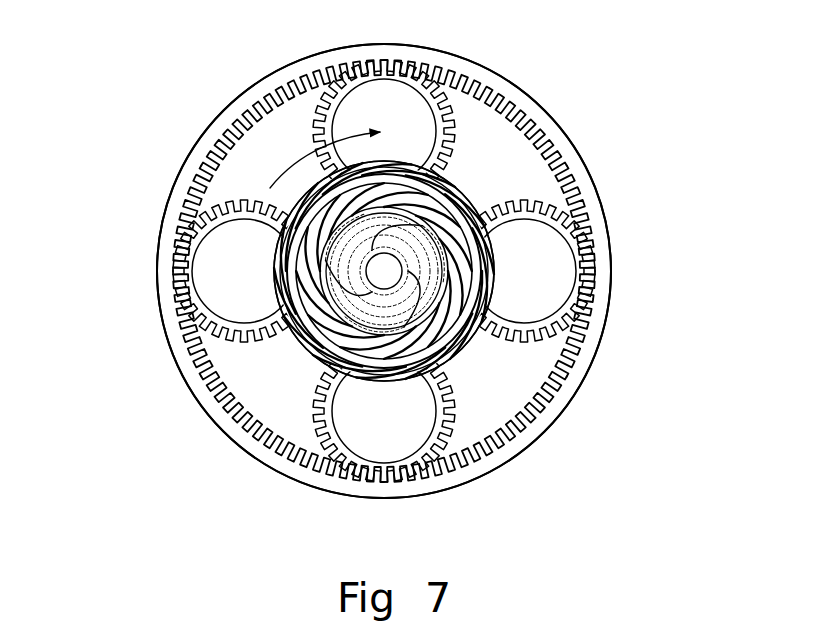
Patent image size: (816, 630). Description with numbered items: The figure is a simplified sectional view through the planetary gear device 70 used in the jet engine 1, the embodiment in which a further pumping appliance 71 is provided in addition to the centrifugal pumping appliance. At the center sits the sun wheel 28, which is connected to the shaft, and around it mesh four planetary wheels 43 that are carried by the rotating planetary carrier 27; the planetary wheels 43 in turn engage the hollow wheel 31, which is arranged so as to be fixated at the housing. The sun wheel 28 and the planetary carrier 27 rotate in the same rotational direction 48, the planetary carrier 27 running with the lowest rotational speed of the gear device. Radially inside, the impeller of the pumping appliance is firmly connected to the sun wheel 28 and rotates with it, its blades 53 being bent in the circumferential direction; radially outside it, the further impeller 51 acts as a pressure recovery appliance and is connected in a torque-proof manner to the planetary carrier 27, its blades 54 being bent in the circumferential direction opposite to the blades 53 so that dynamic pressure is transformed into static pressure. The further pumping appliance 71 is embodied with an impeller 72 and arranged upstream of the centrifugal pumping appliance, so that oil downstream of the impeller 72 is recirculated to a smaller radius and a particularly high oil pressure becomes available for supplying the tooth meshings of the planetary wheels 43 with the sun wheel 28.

The jet engine 1 is at (157, 102).
The planetary gear device 70 is at (232, 90).
The rotational direction 48 is at (292, 178).
The planetary wheels 43 is at (383, 105).
The blades of the further impeller 54 is at (453, 178).
The blades of the impeller 53 is at (376, 165).
The planetary carrier 27 is at (458, 175).
The hollow wheel 31 is at (560, 140).
The further impeller 51 is at (272, 243).
The further pumping appliance 71 is at (490, 224).
The impeller of the further pumping appliance 72 is at (445, 258).
The sun wheel 28 is at (420, 312).